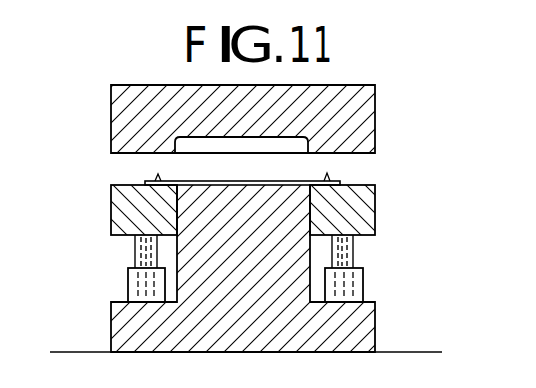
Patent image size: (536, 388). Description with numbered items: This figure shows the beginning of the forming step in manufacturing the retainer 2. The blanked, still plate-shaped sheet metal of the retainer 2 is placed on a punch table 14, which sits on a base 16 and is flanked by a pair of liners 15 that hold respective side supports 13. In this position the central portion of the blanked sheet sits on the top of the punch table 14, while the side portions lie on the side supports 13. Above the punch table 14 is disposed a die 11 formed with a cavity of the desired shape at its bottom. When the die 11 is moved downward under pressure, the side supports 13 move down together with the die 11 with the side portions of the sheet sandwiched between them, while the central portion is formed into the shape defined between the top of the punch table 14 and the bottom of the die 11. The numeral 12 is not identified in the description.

The retainer 2 is at (144, 181).
The die 11 is at (360, 106).
The positioning pin 12 is at (327, 173).
The side support 13 is at (357, 217).
The punch table 14 is at (306, 257).
The liner 15 is at (350, 287).
The base 16 is at (380, 366).